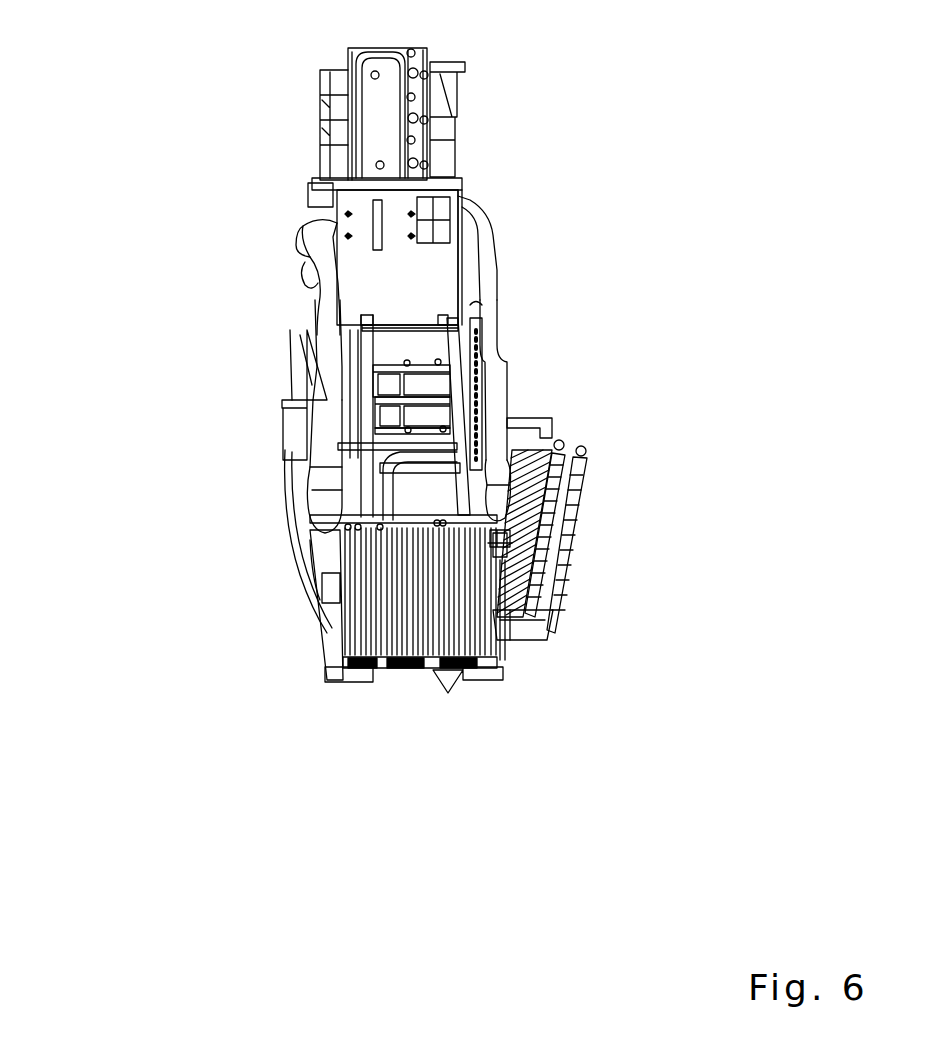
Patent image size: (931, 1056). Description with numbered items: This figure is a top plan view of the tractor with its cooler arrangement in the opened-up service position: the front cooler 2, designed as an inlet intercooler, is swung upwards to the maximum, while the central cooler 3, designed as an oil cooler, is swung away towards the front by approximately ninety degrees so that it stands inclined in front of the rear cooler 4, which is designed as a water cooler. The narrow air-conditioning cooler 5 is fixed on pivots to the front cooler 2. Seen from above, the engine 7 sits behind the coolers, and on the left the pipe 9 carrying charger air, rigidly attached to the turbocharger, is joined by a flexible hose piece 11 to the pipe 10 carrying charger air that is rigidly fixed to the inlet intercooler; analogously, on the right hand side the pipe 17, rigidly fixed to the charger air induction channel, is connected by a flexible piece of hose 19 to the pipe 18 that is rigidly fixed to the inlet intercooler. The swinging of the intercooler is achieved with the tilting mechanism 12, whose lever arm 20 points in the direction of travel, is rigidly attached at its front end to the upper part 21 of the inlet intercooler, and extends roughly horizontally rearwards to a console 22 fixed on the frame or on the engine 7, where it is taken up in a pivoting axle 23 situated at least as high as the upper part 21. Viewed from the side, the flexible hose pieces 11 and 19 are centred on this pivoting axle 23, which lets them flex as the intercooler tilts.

The engine 7 is at (382, 140).
The pipe carrying charger air 9 is at (310, 230).
The console 22 is at (407, 272).
The flexible hose piece 11 is at (323, 320).
The pipe carrying charger air 10 is at (320, 438).
The pivoting axle 23 is at (410, 325).
The tilting mechanism 12 is at (248, 425).
The lever arm 20 is at (453, 350).
The pipe carrying charger air 17 is at (477, 230).
The flexible piece of hose 19 is at (489, 327).
The pipe carrying charger air 18 is at (498, 387).
The upper part of the inlet intercooler 21 is at (323, 522).
The central cooler 3 is at (543, 525).
The rear cooler 4 is at (582, 470).
The front cooler 2 is at (635, 659).
The air-conditioning cooler 5 is at (540, 622).